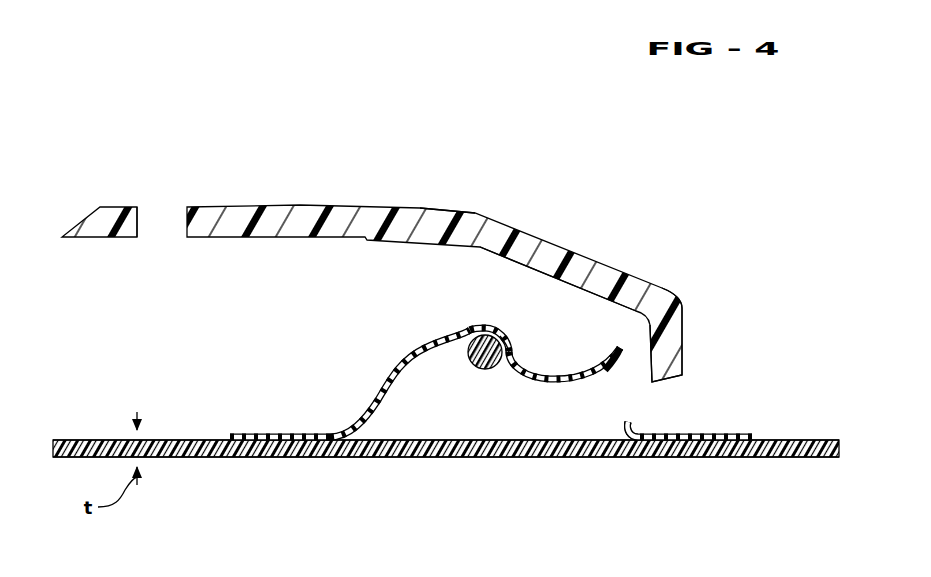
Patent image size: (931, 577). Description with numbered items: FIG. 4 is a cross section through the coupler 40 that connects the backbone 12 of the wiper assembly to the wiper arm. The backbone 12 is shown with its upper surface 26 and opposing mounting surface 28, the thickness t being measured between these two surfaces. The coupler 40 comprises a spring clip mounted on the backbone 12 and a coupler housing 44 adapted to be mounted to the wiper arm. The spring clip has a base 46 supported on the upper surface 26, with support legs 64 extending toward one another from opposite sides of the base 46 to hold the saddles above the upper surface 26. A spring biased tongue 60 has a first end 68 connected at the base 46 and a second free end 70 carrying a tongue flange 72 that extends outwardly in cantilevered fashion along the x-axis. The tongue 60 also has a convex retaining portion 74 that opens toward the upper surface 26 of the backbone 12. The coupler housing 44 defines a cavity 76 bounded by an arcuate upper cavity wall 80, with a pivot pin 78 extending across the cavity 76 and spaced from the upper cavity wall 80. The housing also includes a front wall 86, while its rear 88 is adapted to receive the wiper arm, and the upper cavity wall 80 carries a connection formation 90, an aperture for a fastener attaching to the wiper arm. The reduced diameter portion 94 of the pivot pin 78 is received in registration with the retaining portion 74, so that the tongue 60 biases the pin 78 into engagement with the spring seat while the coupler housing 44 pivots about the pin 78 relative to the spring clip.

The backbone 12 is at (109, 425).
The upper surface 26 is at (193, 440).
The mounting surface 28 is at (188, 458).
The coupler 40 is at (481, 232).
The coupler housing 44 is at (316, 200).
The base 46 is at (258, 433).
The spring biased tongue 60 is at (493, 333).
The support legs 64 is at (640, 412).
The first end 68 is at (335, 434).
The second free end 70 is at (567, 373).
The tongue flange 72 is at (616, 347).
The convex retaining portion 74 is at (486, 335).
The cavity 76 is at (476, 294).
The pivot pin 78 is at (461, 361).
The upper cavity wall 80 is at (407, 247).
The front wall 86 is at (683, 332).
The rear 88 is at (66, 287).
The connection formation 90 is at (138, 222).
The reduced diameter portion 94 is at (502, 348).